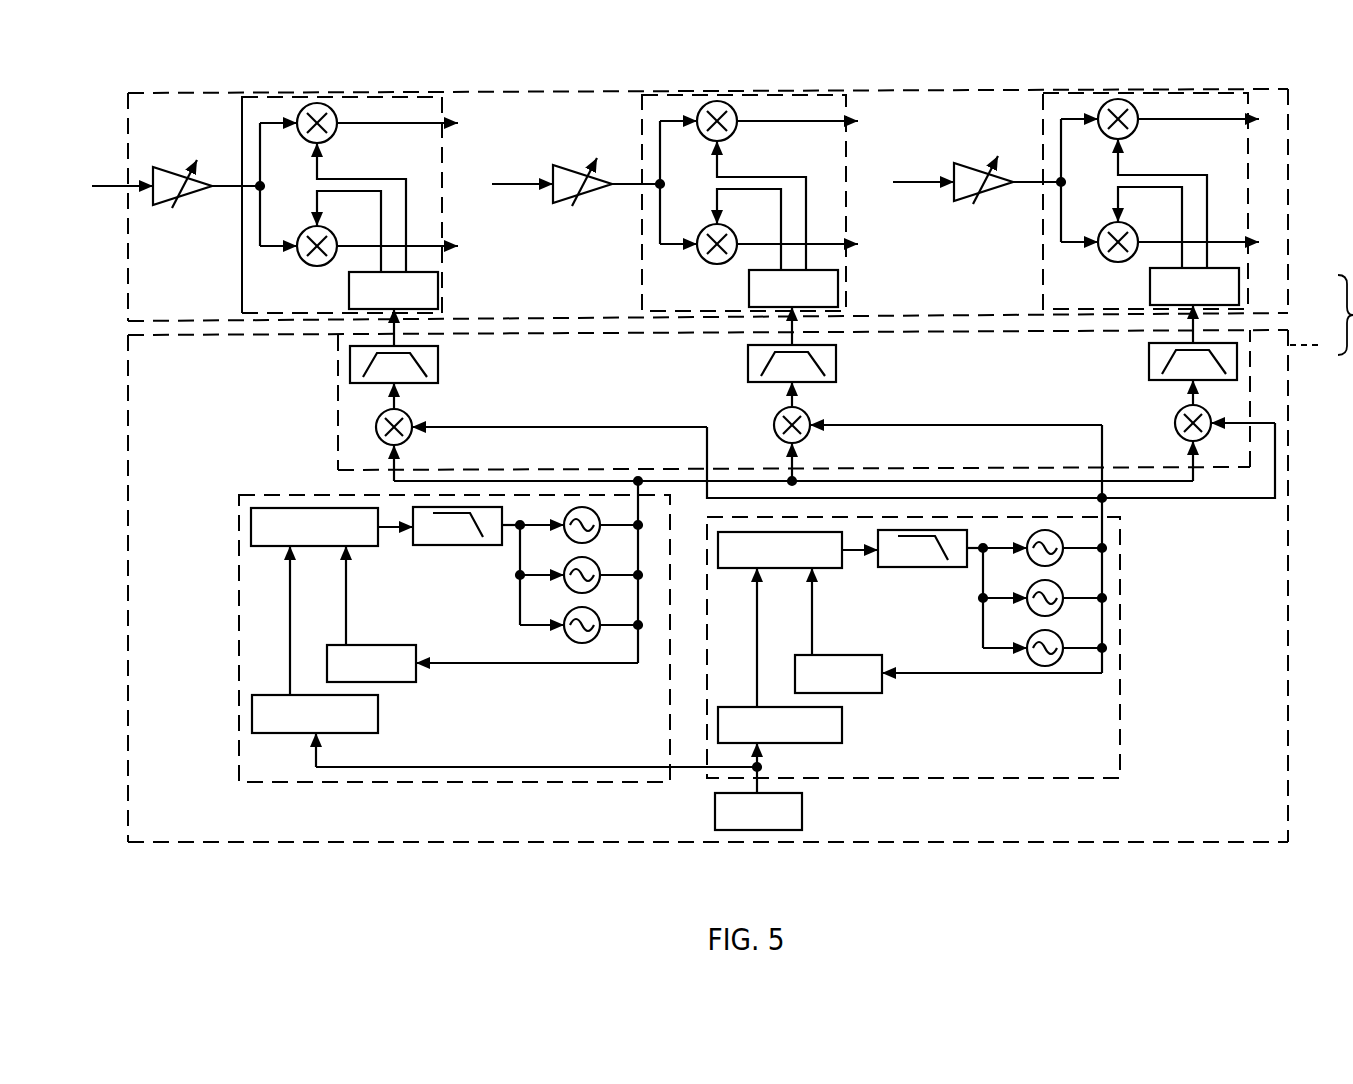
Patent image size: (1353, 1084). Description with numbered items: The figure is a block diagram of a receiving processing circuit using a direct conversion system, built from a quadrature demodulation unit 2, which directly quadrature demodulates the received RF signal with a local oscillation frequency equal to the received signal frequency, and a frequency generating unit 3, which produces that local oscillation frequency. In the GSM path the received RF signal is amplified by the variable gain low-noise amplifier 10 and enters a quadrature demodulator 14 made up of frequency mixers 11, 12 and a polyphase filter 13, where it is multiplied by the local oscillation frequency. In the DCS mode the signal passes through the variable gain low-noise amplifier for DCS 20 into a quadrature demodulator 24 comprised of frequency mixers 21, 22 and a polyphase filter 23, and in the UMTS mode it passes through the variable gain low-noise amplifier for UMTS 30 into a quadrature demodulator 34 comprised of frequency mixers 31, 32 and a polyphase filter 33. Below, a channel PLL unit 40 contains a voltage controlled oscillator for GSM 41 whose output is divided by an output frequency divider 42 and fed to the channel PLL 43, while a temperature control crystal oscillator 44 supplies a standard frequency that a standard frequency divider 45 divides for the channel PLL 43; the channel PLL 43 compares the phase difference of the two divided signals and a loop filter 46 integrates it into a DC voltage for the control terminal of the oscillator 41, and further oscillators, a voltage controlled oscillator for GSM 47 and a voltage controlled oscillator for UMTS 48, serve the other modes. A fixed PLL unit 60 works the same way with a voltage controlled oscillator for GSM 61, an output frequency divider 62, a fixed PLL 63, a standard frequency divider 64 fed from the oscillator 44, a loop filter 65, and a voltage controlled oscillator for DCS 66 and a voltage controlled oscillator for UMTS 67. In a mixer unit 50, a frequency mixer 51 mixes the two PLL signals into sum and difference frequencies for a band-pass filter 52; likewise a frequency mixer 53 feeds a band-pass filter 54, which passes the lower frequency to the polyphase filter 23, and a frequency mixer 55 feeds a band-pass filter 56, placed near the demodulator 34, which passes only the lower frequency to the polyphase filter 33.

The quadrature demodulation unit 2 is at (1290, 292).
The frequency generating unit 3 is at (733, 573).
The variable gain low-noise amplifier 10 is at (171, 171).
The frequency mixer 11 is at (304, 141).
The frequency mixer 12 is at (303, 261).
The polyphase filter 13 is at (349, 292).
The quadrature demodulator 14 is at (240, 271).
The variable gain low-noise amplifier for DCS 20 is at (576, 166).
The frequency mixer 21 is at (765, 142).
The frequency mixer 22 is at (766, 258).
The polyphase filter 23 is at (770, 224).
The quadrature demodulator 24 is at (707, 203).
The variable gain low-noise amplifier for UMTS 30 is at (977, 164).
The frequency mixer 31 is at (1166, 140).
The frequency mixer 32 is at (1167, 256).
The polyphase filter 33 is at (1171, 222).
The quadrature demodulator 34 is at (1108, 201).
The channel PLL unit 40 is at (237, 563).
The voltage controlled oscillator for GSM 41 is at (570, 543).
The output frequency divider 42 is at (406, 646).
The channel PLL 43 is at (268, 547).
The temperature control crystal oscillator 44 is at (802, 814).
The standard frequency divider 45 is at (378, 714).
The loop filter 46 is at (462, 545).
The voltage controlled oscillator for GSM 47 is at (570, 590).
The voltage controlled oscillator for UMTS 48 is at (563, 640).
The mixer unit 50 is at (336, 418).
The frequency mixer 51 is at (411, 415).
The band-pass filter 52 is at (438, 360).
The frequency mixer 53 is at (809, 413).
The band-pass filter 54 is at (835, 359).
The frequency mixer 55 is at (1174, 418).
The band-pass filter 56 is at (1149, 359).
The fixed PLL unit 60 is at (1122, 628).
The voltage controlled oscillator for GSM 61 is at (1033, 566).
The output frequency divider 62 is at (856, 656).
The fixed PLL 63 is at (738, 569).
The standard frequency divider 64 is at (842, 725).
The loop filter 65 is at (930, 567).
The voltage controlled oscillator for DCS 66 is at (1033, 614).
The voltage controlled oscillator for UMTS 67 is at (1028, 654).